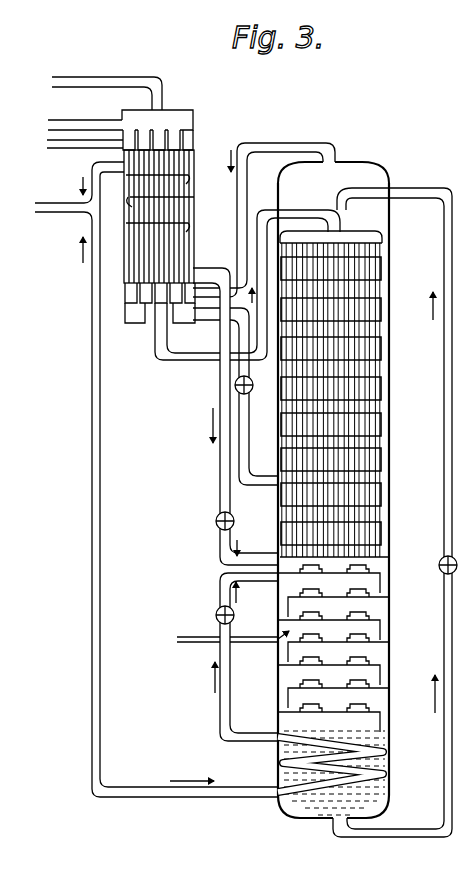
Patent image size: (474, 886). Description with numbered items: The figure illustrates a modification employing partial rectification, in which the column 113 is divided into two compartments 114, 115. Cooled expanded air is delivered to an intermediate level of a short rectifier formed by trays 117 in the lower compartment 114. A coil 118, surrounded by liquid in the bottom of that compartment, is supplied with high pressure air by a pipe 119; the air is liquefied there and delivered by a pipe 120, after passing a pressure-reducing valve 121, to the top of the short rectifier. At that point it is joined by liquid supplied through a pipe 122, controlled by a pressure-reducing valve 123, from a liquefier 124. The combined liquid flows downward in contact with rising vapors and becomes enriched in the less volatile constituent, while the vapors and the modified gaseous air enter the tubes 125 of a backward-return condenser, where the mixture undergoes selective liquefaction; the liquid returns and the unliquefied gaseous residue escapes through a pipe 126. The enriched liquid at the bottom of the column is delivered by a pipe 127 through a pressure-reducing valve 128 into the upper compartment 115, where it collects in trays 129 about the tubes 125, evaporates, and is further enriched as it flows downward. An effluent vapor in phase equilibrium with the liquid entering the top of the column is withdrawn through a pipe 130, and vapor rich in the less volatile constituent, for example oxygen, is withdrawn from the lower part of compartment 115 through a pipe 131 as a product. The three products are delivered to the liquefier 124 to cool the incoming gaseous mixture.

The column 113 is at (390, 584).
The compartment 114 is at (383, 635).
The compartment 115 is at (380, 218).
The trays 117 is at (372, 645).
The coil 118 is at (385, 758).
The pipe 119 is at (225, 797).
The pipe 120 is at (221, 718).
The pressure-reducing valve 121 is at (216, 612).
The pipe 122 is at (220, 478).
The pressure-reducing valve 123 is at (216, 521).
The liquefier 124 is at (194, 223).
The tubes 125 is at (385, 413).
The pipe 126 is at (297, 210).
The pipe 127 is at (443, 607).
The pressure-reducing valve 128 is at (441, 558).
The trays 129 is at (385, 272).
The pipe 130 is at (307, 142).
The pipe 131 is at (261, 480).